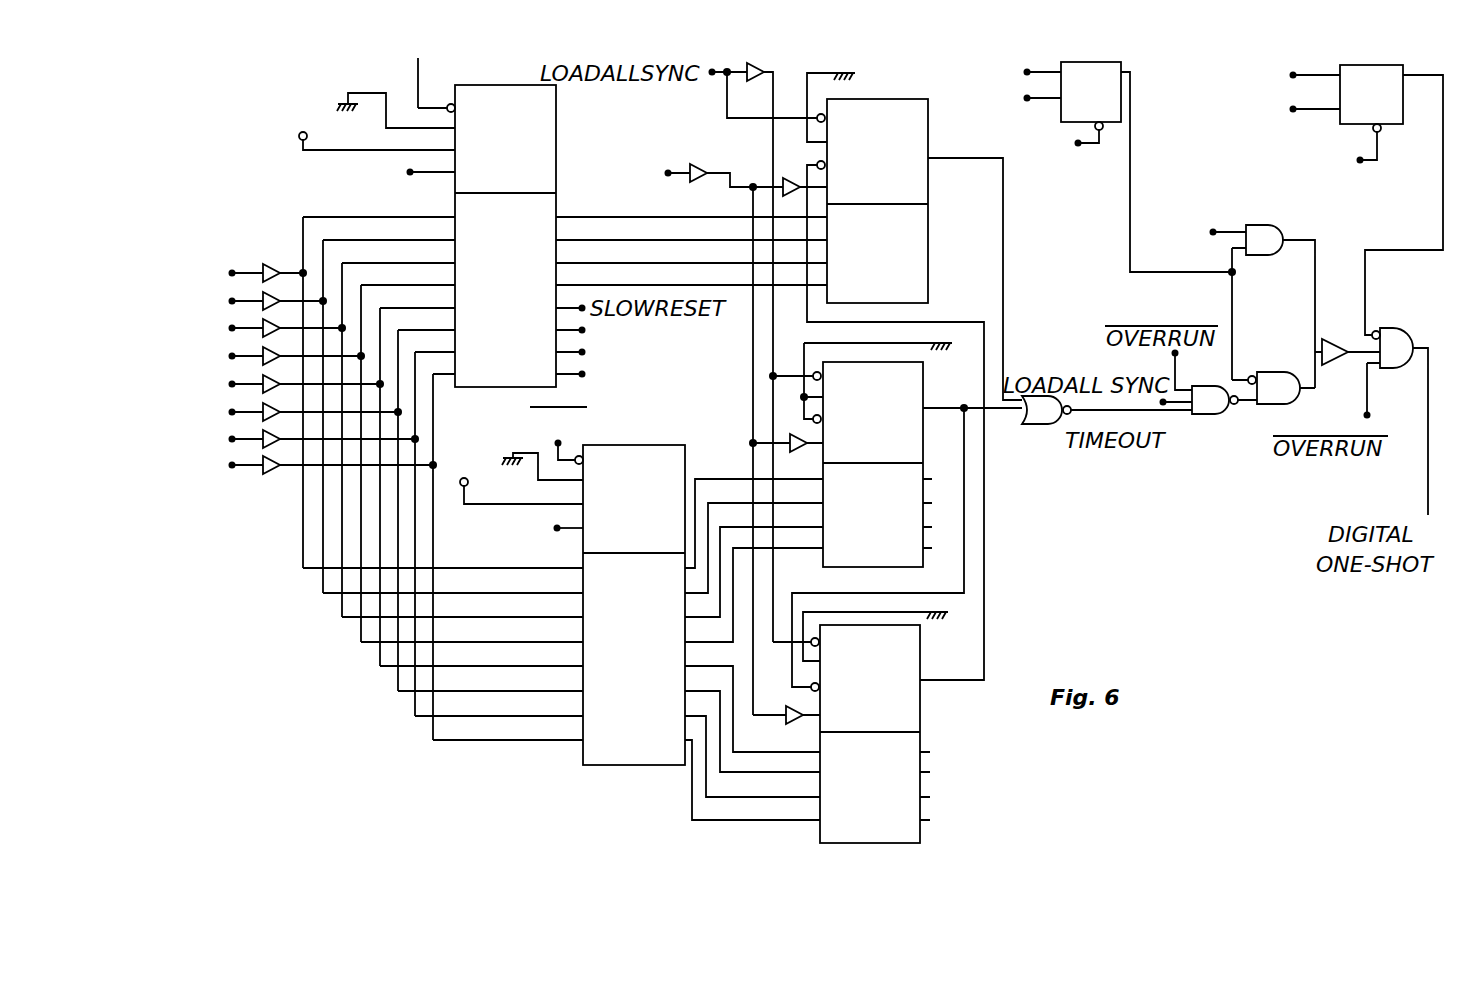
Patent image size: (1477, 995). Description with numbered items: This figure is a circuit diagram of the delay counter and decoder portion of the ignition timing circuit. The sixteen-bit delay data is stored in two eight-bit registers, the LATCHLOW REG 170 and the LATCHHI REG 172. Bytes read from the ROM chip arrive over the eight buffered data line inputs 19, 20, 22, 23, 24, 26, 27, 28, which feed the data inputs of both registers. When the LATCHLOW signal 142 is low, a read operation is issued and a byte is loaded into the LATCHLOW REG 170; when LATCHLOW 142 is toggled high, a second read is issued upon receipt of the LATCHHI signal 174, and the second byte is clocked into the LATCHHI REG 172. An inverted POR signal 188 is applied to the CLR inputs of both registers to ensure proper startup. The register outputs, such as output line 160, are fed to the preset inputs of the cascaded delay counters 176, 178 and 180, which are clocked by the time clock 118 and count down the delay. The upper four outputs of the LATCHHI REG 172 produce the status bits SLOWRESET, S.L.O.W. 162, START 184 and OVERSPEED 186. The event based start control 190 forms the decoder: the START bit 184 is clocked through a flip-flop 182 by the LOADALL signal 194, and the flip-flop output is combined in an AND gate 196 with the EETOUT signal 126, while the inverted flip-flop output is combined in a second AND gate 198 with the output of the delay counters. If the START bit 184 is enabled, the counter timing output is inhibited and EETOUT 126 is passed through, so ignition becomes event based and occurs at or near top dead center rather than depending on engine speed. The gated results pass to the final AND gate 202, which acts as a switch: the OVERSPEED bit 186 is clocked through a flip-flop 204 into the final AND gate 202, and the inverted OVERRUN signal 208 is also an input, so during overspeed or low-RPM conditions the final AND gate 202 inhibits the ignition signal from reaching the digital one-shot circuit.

The data input D0 19 is at (360, 392).
The data input D1 20 is at (360, 416).
The emitter 22 is at (360, 440).
The data input D3 23 is at (360, 463).
The detector 24 is at (360, 487).
The data input D5 26 is at (360, 510).
The data input D6 27 is at (360, 534).
The data input D7 28 is at (360, 557).
The time clock output 118 is at (652, 166).
The EETOUT signal 126 is at (1215, 193).
The LATCHLOW signal 142 is at (505, 540).
The latch output line 160 is at (702, 292).
The SLOW signal 162 is at (650, 331).
The LATCHLOW REG 170 is at (678, 449).
The LATCHHI REG 172 is at (511, 85).
The LATCHHI signal 174 is at (254, 172).
The delay counter 176 is at (900, 99).
The delay counter 178 is at (905, 362).
The delay counter 180 is at (876, 625).
The flip-flop 182 is at (1098, 62).
The START bit 184 is at (660, 353).
The OVERSPEED bit 186 is at (668, 384).
The POR1 power-on reset signal 188 is at (368, 48).
The event based start control 190 is at (1168, 548).
The LOADALL signal 194 is at (968, 92).
The AND gate 196 is at (1283, 372).
The second AND gate 198 is at (1285, 235).
The final AND gate 202 is at (1395, 328).
The flip-flop 204 is at (1398, 66).
The inverted OVERRUN signal 208 is at (1338, 338).